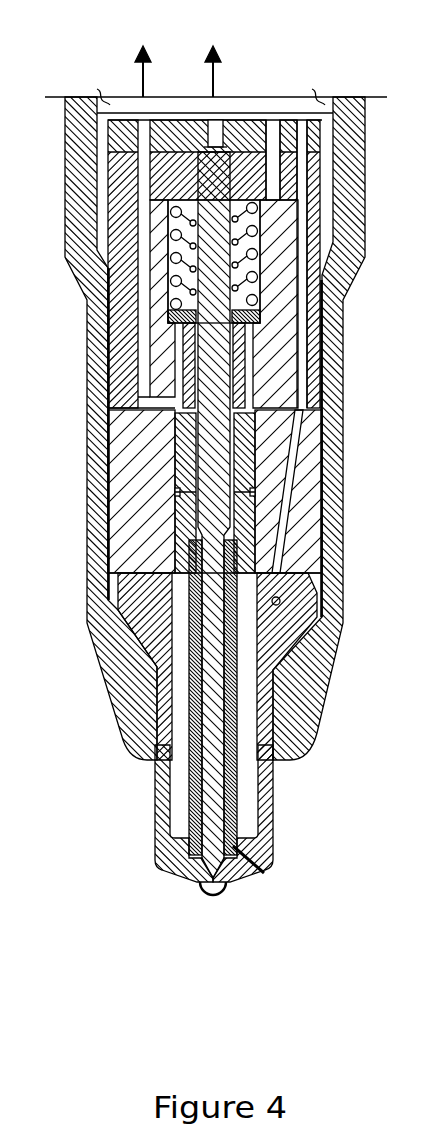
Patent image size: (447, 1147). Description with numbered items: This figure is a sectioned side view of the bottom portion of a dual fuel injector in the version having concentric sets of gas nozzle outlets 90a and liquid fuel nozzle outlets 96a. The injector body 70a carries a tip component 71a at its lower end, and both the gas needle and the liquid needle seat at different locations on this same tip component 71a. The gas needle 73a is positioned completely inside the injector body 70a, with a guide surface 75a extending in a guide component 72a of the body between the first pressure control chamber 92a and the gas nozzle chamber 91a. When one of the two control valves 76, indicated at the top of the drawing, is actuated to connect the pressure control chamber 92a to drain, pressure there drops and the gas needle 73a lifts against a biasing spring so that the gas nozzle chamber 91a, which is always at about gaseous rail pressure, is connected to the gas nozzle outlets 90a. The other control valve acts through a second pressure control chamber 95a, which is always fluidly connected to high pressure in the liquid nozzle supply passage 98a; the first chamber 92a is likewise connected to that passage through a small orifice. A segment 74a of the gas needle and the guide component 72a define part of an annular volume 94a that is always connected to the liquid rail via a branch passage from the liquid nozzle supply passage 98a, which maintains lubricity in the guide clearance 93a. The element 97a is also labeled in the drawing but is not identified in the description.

The injector body 70a is at (343, 337).
The tip component 71a is at (273, 789).
The guide component 72a is at (176, 490).
The gas needle 73a is at (184, 755).
The segment of gas needle 74a is at (178, 496).
The guide surface 75a is at (257, 513).
The control valves 76 is at (212, 44).
The gas nozzle outlets 90a is at (264, 872).
The gas nozzle chamber 91a is at (280, 604).
The pressure control chamber 92a is at (257, 425).
The guide clearance 93a is at (170, 543).
The annular volume 94a is at (177, 490).
The second pressure control chamber 95a is at (207, 145).
The liquid fuel nozzle outlets 96a is at (227, 896).
The fuel inlet passage 97a is at (300, 235).
The liquid nozzle supply passage 98a is at (272, 152).